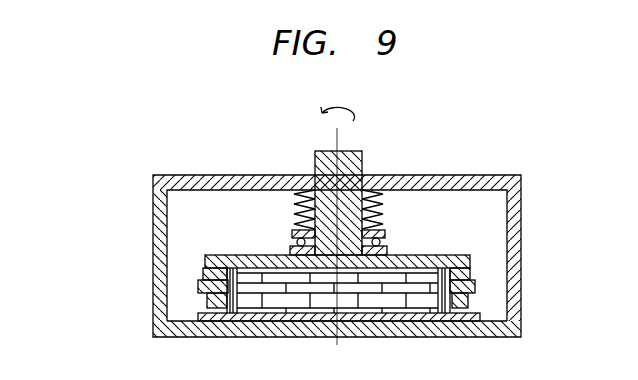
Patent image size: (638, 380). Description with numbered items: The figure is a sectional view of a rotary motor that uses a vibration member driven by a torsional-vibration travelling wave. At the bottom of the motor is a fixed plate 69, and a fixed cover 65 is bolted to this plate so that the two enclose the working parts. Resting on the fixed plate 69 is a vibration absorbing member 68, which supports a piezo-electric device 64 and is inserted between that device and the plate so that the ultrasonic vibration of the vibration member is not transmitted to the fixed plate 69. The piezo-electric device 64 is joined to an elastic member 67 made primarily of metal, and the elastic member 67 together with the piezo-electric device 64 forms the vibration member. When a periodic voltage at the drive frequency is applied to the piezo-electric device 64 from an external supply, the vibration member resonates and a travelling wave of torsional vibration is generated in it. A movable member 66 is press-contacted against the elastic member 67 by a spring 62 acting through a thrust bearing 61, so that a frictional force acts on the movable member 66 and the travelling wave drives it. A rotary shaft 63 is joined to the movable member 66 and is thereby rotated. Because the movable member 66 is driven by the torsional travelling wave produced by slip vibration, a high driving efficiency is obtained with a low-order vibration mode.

The thrust bearing 61 is at (300, 233).
The spring 62 is at (297, 205).
The rotary shaft 63 is at (360, 160).
The piezo-electric device 64 is at (205, 310).
The fixed cover 65 is at (516, 183).
The movable member 66 is at (472, 270).
The elastic member 67 is at (476, 286).
The vibration absorbing member 68 is at (482, 318).
The fixed plate 69 is at (494, 336).